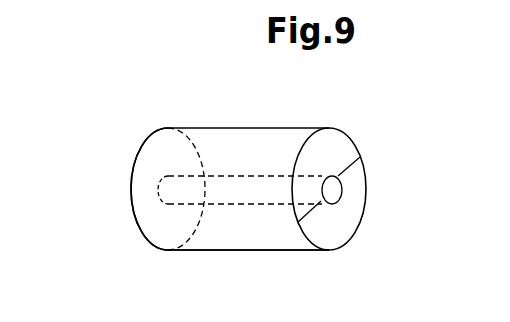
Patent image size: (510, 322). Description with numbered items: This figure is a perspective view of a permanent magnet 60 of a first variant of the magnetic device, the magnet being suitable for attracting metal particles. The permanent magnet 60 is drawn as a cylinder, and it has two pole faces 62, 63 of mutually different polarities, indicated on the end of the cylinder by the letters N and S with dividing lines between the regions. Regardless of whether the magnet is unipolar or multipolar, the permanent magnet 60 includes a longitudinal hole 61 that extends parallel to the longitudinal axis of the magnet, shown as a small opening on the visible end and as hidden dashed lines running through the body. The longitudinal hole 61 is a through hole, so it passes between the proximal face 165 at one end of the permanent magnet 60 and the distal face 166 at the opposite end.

The permanent magnet 60 is at (366, 132).
The longitudinal hole 61 is at (340, 198).
The pole face 62 is at (222, 147).
The pole face 63 is at (257, 233).
The proximal face 165 is at (357, 178).
The distal face 166 is at (118, 160).